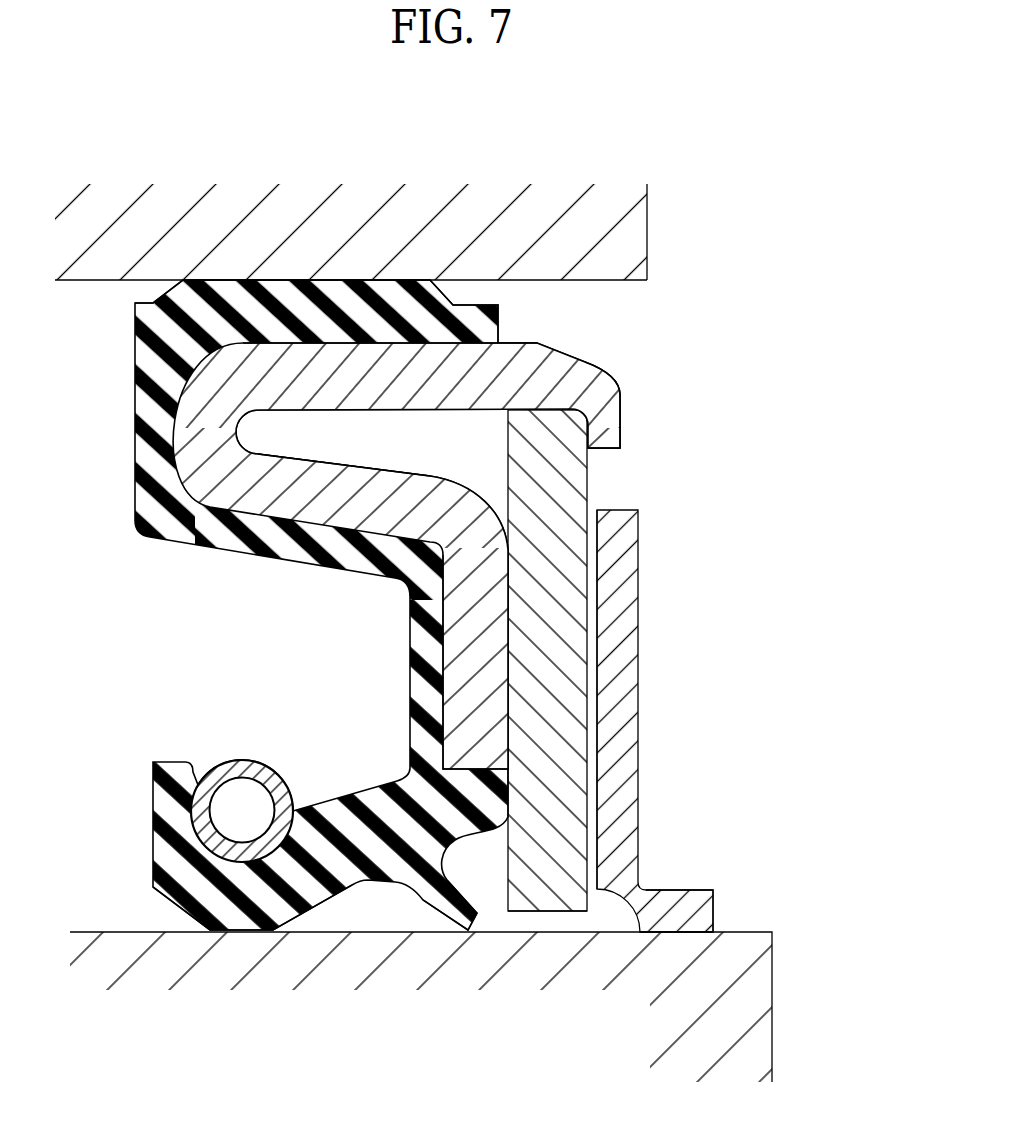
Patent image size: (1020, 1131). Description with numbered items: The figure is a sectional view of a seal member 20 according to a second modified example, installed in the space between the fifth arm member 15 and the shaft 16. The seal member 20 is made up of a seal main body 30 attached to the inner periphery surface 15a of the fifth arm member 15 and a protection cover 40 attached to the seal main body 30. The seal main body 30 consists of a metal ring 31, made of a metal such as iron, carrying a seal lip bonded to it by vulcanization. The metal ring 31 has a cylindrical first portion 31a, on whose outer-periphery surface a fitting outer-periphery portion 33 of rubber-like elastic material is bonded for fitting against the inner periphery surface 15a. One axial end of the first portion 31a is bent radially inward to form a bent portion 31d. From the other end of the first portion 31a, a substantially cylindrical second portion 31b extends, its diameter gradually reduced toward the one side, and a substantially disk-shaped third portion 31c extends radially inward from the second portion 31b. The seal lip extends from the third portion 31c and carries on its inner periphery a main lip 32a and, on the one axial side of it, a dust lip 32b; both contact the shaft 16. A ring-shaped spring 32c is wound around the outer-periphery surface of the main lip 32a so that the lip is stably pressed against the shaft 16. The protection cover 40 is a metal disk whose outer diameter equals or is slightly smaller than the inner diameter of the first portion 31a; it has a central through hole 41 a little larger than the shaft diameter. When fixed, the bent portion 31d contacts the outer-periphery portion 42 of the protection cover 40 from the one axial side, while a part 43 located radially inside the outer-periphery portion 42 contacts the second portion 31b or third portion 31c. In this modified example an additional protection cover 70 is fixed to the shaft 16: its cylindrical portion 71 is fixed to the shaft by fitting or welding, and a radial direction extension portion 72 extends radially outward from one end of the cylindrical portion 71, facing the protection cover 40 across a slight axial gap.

The fifth arm member 15 is at (647, 222).
The inner periphery surface 15a is at (600, 282).
The shaft 16 is at (772, 985).
The seal member 20 is at (737, 413).
The seal main body 30 is at (135, 380).
The metal ring 31 is at (308, 457).
The first portion 31a is at (420, 363).
The second portion 31b is at (293, 503).
The third portion 31c is at (458, 663).
The bent portion 31d is at (610, 398).
The main lip 32a is at (227, 902).
The dust lip 32b is at (450, 903).
The ring-shaped spring 32c is at (222, 760).
The fitting outer-periphery portion 33 is at (307, 303).
The protection cover 40 is at (590, 481).
The through hole 41 is at (552, 912).
The outer-periphery portion 42 is at (577, 425).
The part 43 is at (518, 638).
The additional protection cover 70 is at (640, 722).
The cylindrical portion 71 is at (697, 910).
The radial direction extension portion 72 is at (620, 567).